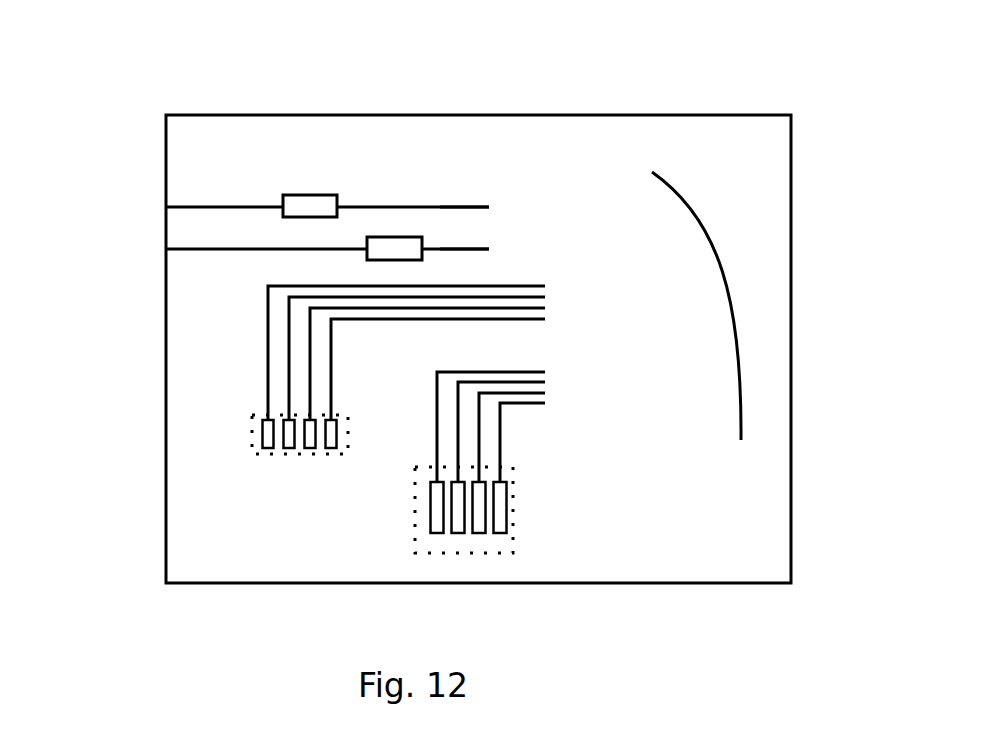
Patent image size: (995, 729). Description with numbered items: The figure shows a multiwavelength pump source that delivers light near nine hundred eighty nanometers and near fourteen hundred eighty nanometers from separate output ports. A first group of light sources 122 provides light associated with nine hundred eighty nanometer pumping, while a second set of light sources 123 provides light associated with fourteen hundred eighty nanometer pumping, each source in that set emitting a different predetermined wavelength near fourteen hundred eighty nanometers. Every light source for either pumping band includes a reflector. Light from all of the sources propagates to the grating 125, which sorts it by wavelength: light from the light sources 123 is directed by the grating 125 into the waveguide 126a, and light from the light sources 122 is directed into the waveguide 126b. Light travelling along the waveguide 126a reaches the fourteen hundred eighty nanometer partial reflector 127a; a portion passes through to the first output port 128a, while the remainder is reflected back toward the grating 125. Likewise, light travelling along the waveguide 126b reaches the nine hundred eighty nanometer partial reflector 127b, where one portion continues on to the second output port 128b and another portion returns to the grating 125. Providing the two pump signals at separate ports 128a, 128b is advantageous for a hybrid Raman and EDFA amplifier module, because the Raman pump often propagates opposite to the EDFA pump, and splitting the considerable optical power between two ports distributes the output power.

The light sources 122 is at (250, 432).
The second set of light sources 123 is at (472, 553).
The grating 125 is at (740, 333).
The waveguide 126a is at (480, 249).
The waveguide 126b is at (455, 207).
The 1480 nm partial reflector 127a is at (415, 237).
The 980 nm partial reflector 127b is at (323, 195).
The first output port 128a is at (165, 249).
The second output port 128b is at (165, 207).